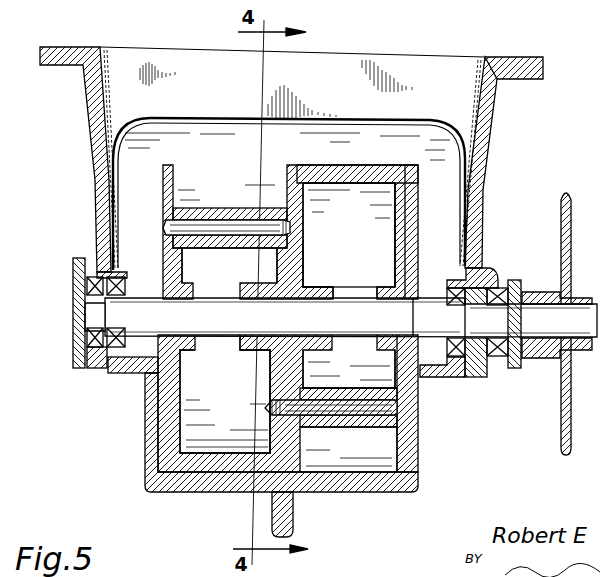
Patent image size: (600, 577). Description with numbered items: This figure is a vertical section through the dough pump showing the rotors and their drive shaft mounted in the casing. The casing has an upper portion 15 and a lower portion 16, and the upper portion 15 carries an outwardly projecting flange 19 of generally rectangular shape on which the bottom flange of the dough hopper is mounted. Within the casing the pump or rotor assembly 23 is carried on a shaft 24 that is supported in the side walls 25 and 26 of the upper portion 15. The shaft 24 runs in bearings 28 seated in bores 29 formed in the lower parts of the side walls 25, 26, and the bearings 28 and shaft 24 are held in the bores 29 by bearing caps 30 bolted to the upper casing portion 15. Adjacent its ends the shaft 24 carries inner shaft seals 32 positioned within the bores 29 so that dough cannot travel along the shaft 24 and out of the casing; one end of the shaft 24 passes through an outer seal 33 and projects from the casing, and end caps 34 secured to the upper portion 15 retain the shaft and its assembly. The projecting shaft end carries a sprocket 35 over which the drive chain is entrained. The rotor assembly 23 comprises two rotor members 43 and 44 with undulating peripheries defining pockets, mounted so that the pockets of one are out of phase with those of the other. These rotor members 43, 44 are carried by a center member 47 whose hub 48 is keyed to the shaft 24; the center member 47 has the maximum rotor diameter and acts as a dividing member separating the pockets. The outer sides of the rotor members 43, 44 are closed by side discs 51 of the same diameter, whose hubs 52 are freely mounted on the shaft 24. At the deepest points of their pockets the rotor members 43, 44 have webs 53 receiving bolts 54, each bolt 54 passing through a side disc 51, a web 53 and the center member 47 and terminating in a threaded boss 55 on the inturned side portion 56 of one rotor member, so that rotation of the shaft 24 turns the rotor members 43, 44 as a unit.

The upper portion of pump casing 15 is at (485, 158).
The lower portion of pump casing 16 is at (348, 494).
The outwardly projecting flange 19 is at (545, 68).
The pump or rotor assembly 23 is at (330, 241).
The shaft 24 is at (352, 300).
The side wall 25 is at (98, 186).
The side wall 26 is at (483, 218).
The bearings 28 is at (94, 368).
The bores 29 is at (99, 280).
The bearing caps 30 is at (105, 374).
The inner shaft seals 32 is at (126, 285).
The outer seal 33 is at (509, 290).
The end caps 34 is at (73, 338).
The sprocket 35 is at (559, 445).
The rotor member 43 is at (213, 455).
The rotor member 44 is at (361, 183).
The center member 47 is at (294, 166).
The hub 48 is at (243, 350).
The side discs 51 is at (165, 179).
The hubs 52 is at (189, 283).
The webs 53 is at (196, 208).
The bolts 54 is at (236, 222).
The threaded boss 55 is at (307, 248).
The inturned side portion 56 is at (305, 200).